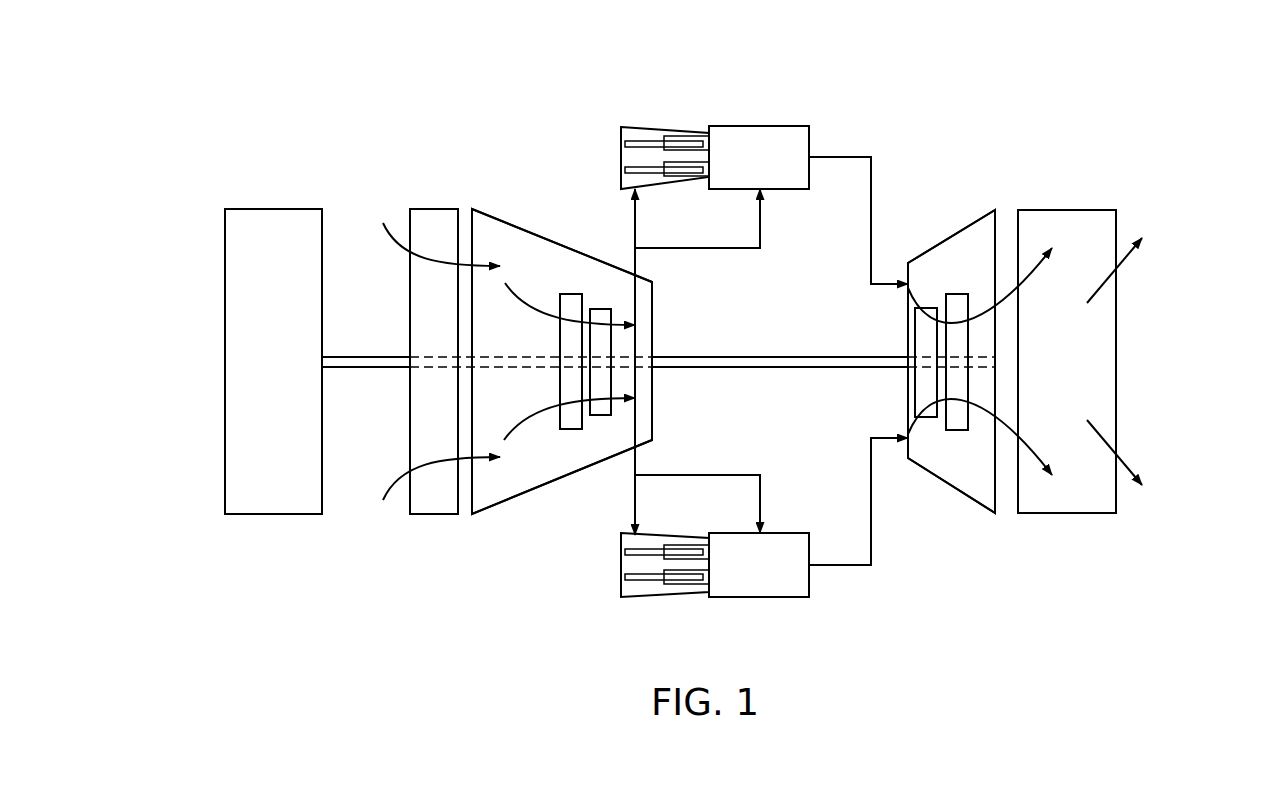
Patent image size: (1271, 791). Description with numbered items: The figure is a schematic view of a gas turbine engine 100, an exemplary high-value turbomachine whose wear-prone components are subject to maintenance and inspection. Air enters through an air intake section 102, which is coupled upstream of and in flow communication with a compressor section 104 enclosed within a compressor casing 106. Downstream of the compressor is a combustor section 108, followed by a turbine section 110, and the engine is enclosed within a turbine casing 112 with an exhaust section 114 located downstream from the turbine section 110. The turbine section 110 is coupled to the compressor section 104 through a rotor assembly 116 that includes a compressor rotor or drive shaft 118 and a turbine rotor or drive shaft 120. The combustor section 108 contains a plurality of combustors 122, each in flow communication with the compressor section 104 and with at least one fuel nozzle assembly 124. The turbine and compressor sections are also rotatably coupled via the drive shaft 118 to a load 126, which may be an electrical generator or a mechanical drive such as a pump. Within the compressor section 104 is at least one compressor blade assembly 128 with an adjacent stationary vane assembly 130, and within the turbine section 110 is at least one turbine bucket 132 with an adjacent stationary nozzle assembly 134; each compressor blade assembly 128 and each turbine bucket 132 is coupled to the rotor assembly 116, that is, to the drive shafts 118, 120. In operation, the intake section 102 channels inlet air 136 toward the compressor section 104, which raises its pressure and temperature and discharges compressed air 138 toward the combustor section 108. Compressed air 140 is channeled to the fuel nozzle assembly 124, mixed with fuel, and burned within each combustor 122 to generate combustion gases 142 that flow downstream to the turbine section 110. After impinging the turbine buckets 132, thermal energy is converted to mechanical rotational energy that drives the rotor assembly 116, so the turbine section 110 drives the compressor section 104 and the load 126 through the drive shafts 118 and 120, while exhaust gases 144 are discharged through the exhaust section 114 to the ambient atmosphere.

The gas turbine engine 100 is at (198, 117).
The air intake section 102 is at (434, 209).
The compressor section 104 is at (483, 198).
The compressor casing 106 is at (548, 240).
The combustor section 108 is at (905, 138).
The turbine section 110 is at (970, 210).
The turbine casing 112 is at (908, 263).
The exhaust section 114 is at (1068, 210).
The rotor assembly 116 is at (712, 348).
The compressor drive shaft 118 is at (495, 364).
The turbine drive shaft 120 is at (977, 382).
The combustor 122 is at (808, 361).
The fuel nozzle assembly 124 is at (650, 132).
The load 126 is at (268, 209).
The compressor blade assembly 128 is at (602, 415).
The stationary vane assembly 130 is at (570, 429).
The turbine bucket 132 is at (928, 417).
The stationary nozzle assembly 134 is at (958, 430).
The inlet air 136 is at (381, 246).
The compressed air 138 is at (522, 306).
The compressed air 140 is at (640, 227).
The combustion gases 142 is at (1007, 297).
The exhaust gases 144 is at (1120, 268).